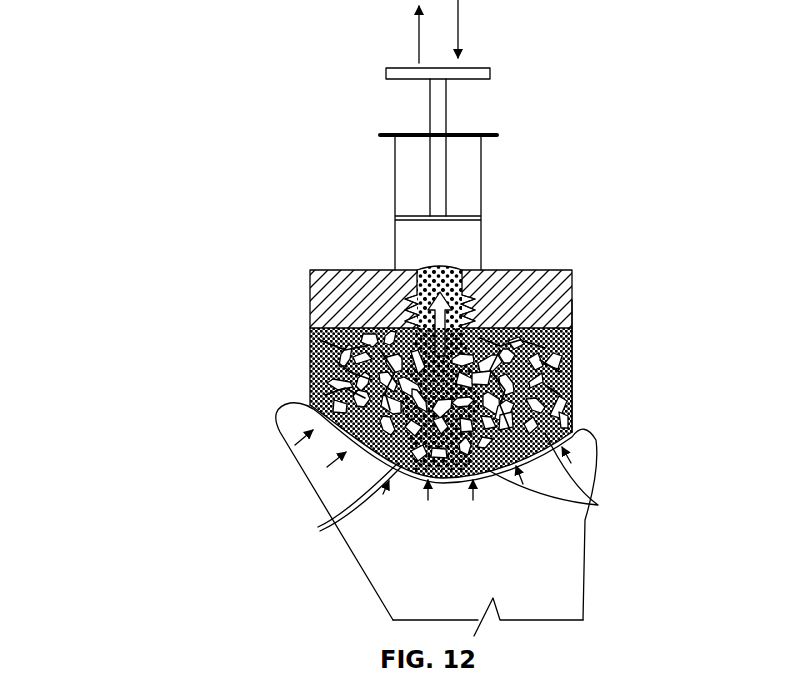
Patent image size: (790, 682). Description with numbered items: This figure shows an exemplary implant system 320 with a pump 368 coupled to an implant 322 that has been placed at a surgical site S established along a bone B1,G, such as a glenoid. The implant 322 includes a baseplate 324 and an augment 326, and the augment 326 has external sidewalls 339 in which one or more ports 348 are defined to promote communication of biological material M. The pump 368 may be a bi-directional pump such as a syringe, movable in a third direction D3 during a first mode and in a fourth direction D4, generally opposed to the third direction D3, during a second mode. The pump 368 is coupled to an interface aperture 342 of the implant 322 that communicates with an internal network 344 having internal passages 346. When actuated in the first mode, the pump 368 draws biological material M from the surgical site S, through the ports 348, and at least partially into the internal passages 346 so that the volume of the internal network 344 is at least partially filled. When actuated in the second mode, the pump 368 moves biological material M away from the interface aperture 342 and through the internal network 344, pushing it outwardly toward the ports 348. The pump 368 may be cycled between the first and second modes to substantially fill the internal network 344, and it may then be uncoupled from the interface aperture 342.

The device system 320 is at (126, 34).
The pump 368 is at (375, 63).
The fourth direction D4 is at (417, 29).
The third direction D3 is at (460, 29).
The implant 322 is at (316, 259).
The surgical site S is at (604, 260).
The baseplate 324 is at (310, 282).
The interface aperture 342 is at (447, 272).
The internal passages 346 is at (408, 322).
The augment 326 is at (310, 352).
The sidewalls 339 is at (310, 398).
The internal network 344 is at (577, 374).
The ports 348 is at (320, 525).
The biological material M is at (383, 494).
The bone, glenoid B1,G is at (568, 587).